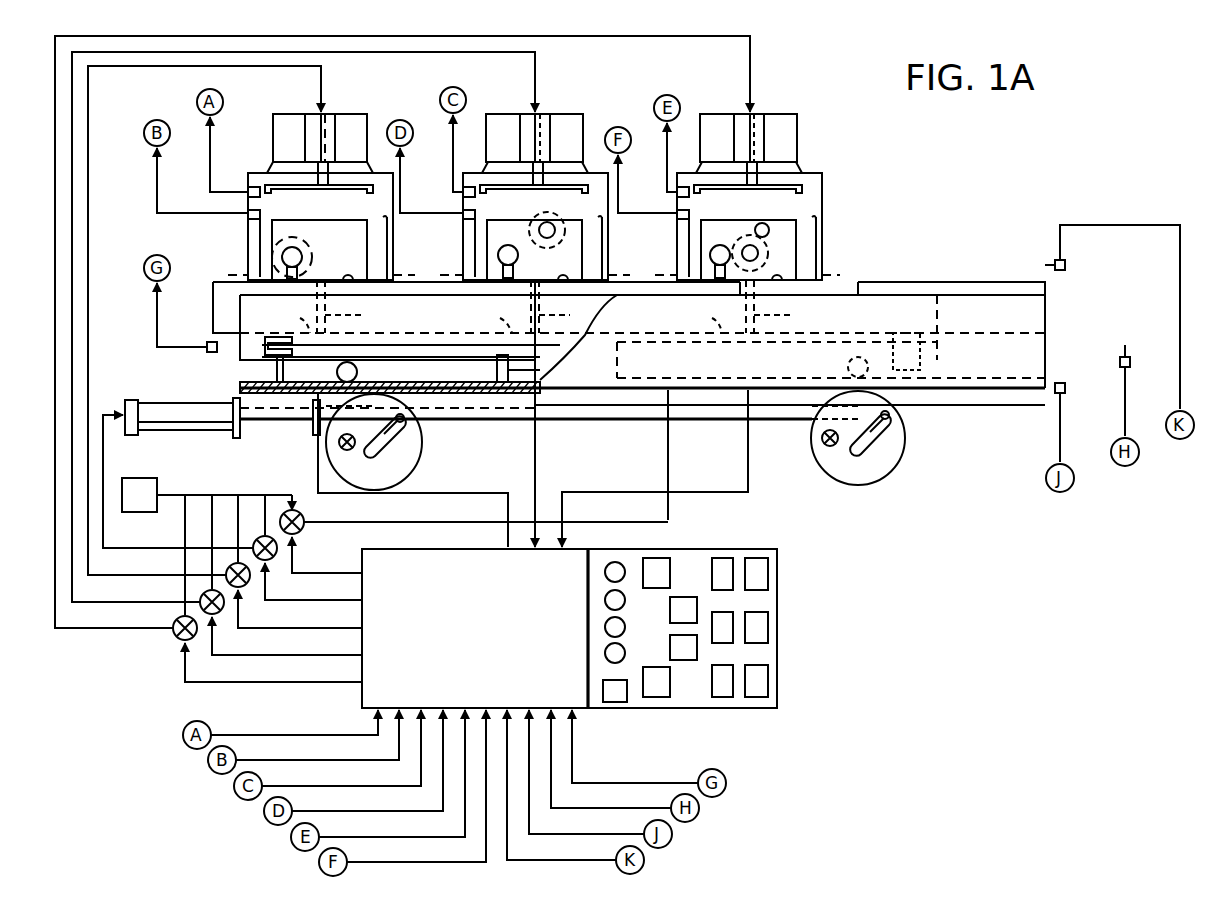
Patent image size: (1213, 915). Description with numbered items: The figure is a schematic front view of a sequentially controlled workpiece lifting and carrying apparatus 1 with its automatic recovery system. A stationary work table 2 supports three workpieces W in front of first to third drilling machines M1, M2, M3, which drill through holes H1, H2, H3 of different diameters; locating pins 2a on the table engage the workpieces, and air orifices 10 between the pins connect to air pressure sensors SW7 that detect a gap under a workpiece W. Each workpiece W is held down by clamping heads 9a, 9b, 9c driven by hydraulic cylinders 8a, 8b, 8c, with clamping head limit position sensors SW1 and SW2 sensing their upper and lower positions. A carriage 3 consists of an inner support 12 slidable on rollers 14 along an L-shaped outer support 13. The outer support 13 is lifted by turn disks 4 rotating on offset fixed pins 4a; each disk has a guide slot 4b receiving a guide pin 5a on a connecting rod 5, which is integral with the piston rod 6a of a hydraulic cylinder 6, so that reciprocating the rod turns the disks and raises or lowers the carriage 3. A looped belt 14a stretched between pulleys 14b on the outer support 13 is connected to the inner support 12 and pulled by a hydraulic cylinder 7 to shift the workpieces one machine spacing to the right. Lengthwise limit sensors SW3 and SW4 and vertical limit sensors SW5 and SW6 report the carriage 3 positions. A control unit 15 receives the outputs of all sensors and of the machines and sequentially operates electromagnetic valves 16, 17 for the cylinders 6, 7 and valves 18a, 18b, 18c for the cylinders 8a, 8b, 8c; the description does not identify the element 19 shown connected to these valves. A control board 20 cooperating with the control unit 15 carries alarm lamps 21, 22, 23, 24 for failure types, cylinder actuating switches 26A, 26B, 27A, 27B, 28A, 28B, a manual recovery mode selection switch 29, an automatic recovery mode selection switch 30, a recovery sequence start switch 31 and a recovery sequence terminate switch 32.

The workpiece lifting and carrying apparatus 1 is at (920, 243).
The stationary work table 2 is at (213, 290).
The locating pins 2a is at (860, 272).
The carriage 3 is at (950, 463).
The turn disks 4 is at (399, 477).
The fixed pins 4a is at (340, 449).
The guide slot 4b is at (386, 441).
The connecting rod 5 is at (612, 422).
The guide pin 5a is at (406, 424).
The hydraulic cylinder 6 is at (178, 431).
The piston rod 6a is at (262, 422).
The hydraulic cylinder 7 is at (700, 395).
The hydraulic cylinder 8a is at (326, 114).
The hydraulic cylinder 8b is at (534, 114).
The hydraulic cylinder 8c is at (749, 114).
The clamping head 9a is at (269, 183).
The clamping head 9b is at (488, 184).
The clamping head 9c is at (702, 184).
The air orifices 10 is at (570, 316).
The inner support 12 is at (240, 328).
The outer support 13 is at (976, 294).
The rollers 14 is at (358, 362).
The belt 14a is at (463, 348).
The pulleys 14b is at (266, 354).
The control unit 15 is at (512, 682).
The electromagnetic valve 16 is at (275, 562).
The electromagnetic valve 17 is at (302, 530).
The electromagnetic valve 18a is at (246, 588).
The electromagnetic valve 18b is at (221, 615).
The electromagnetic valve 18c is at (177, 645).
The air source 19 is at (140, 513).
The control board 20 is at (722, 708).
The alarm lamp 21 is at (614, 562).
The alarm lamp 22 is at (626, 592).
The alarm lamp 23 is at (625, 627).
The alarm lamp 24 is at (625, 653).
The cylinder actuating switch 26A is at (726, 558).
The cylinder actuating switch 26B is at (770, 567).
The cylinder actuating switch 27A is at (726, 612).
The cylinder actuating switch 27B is at (770, 633).
The cylinder actuating switch 28A is at (735, 698).
The cylinder actuating switch 28B is at (770, 686).
The manual recovery mode selection switch 29 is at (661, 558).
The automatic recovery mode selection switch 30 is at (622, 703).
The recovery sequence start switch 31 is at (684, 597).
The recovery sequence terminate switch 32 is at (690, 661).
The drilling machine M1 is at (274, 128).
The drilling machine M2 is at (566, 114).
The drilling machine M3 is at (780, 114).
The through hole H1 is at (303, 257).
The through hole H2 is at (544, 226).
The through hole H3 is at (770, 233).
The workpiece W is at (369, 256).
The clamping head limit position sensor SW1 is at (247, 192).
The clamping head limit position sensor SW2 is at (247, 215).
The carriage lengthwise limit position sensor SW3 is at (206, 352).
The carriage lengthwise limit position sensor SW4 is at (1119, 362).
The carriage vertical limit position sensor SW5 is at (1066, 265).
The carriage vertical limit position sensor SW6 is at (1055, 394).
The air pressure sensor SW7 is at (486, 318).